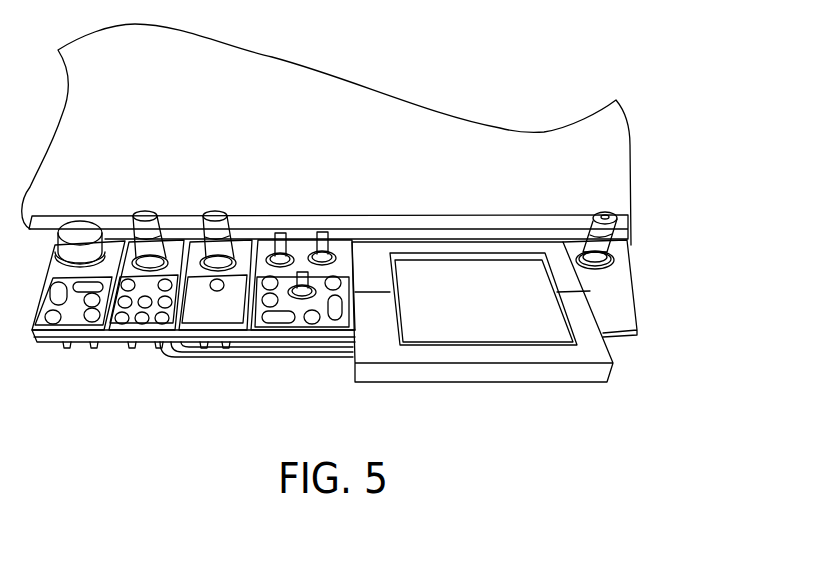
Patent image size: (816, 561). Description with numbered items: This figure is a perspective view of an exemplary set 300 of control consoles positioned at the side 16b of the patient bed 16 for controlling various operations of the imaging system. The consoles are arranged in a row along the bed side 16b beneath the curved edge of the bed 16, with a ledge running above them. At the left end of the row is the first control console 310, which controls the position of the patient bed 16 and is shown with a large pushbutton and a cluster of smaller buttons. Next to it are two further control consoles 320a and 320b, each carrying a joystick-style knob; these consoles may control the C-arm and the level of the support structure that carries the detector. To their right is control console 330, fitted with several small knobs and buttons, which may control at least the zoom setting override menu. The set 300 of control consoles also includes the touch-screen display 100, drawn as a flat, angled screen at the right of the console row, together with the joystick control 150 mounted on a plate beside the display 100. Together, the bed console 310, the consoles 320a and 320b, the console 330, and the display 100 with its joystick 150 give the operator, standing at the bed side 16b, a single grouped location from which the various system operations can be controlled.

The patient bed 16 is at (442, 138).
The side of the bed 16b is at (564, 213).
The set of control consoles 300 is at (611, 183).
The first control console 310 is at (77, 347).
The control console 320a is at (145, 347).
The control console 320b is at (218, 347).
The control console 330 is at (298, 347).
The touch-screen display 100 is at (428, 238).
The joystick control 150 is at (613, 243).